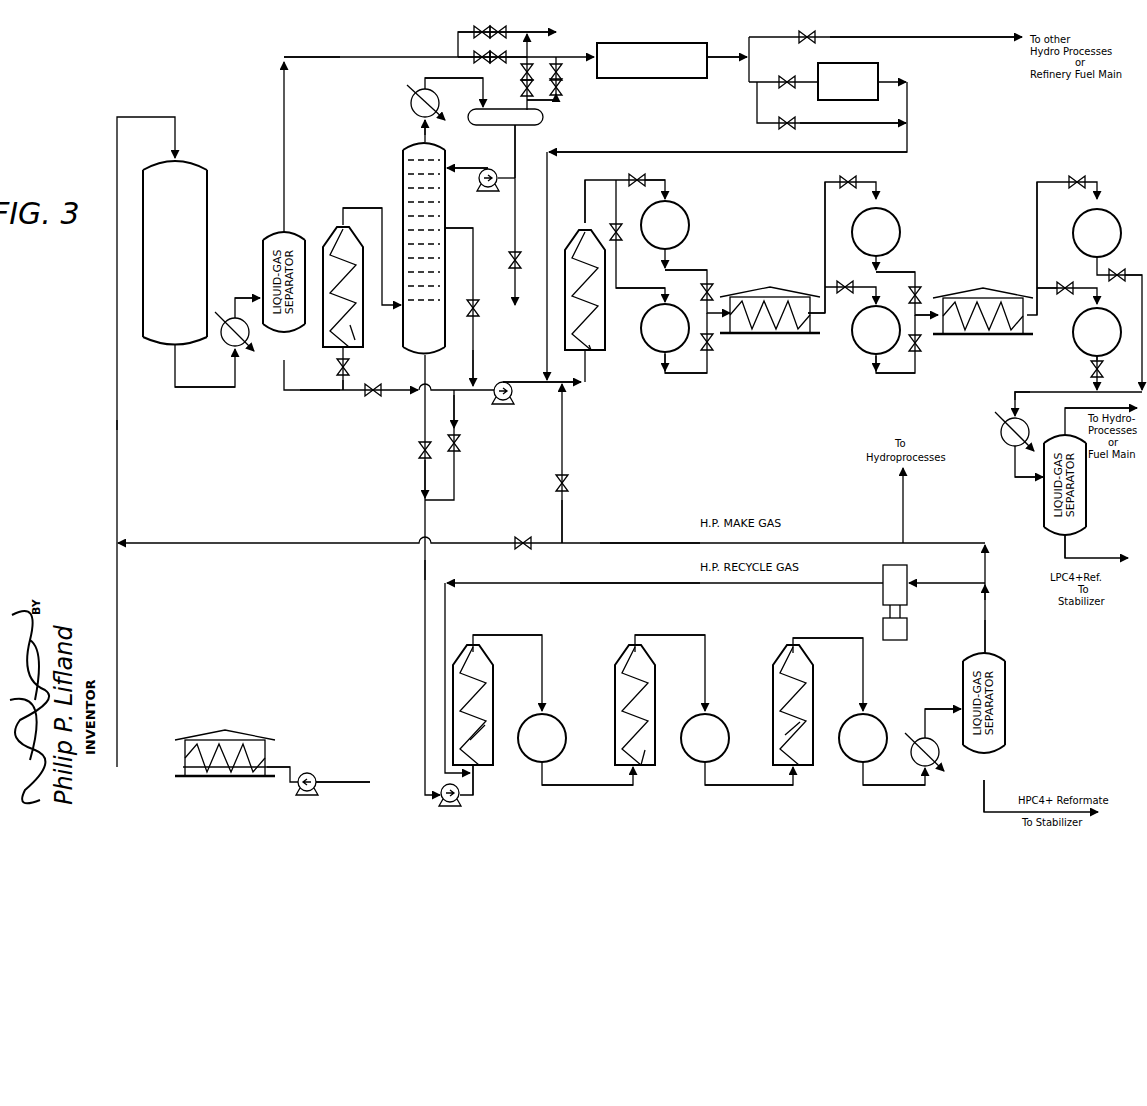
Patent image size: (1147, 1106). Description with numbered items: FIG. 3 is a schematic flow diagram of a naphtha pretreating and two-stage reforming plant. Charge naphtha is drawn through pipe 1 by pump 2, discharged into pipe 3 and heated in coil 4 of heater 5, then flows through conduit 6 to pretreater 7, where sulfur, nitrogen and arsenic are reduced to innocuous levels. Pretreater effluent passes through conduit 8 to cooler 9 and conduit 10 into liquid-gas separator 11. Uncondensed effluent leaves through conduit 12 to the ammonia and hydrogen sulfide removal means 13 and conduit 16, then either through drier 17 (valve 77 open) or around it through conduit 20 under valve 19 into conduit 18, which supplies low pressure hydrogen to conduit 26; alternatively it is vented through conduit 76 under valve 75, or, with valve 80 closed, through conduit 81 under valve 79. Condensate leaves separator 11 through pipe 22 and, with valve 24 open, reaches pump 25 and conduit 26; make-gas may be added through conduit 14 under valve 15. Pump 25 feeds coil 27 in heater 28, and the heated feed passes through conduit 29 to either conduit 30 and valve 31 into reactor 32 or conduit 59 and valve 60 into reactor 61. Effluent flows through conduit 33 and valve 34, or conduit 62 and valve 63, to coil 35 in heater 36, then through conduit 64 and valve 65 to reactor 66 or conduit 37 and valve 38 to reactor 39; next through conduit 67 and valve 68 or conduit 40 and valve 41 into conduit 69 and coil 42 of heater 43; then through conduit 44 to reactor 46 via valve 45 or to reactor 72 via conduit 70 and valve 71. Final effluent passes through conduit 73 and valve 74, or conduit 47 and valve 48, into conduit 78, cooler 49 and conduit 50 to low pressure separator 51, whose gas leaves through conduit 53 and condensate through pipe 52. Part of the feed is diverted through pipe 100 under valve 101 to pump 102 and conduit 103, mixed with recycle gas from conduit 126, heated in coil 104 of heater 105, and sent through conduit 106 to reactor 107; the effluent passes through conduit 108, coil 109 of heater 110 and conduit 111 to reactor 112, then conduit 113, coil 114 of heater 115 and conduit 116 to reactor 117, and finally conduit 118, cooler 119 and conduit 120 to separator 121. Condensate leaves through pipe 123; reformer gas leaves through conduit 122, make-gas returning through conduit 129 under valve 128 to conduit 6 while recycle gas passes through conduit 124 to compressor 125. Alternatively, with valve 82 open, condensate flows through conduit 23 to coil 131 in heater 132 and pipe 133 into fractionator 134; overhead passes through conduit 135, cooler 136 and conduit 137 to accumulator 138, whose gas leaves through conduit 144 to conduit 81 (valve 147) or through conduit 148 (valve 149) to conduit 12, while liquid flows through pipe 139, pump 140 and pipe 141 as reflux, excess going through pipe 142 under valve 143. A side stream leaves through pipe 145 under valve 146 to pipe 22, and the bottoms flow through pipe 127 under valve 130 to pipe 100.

The pipe 1 is at (352, 780).
The pump 2 is at (313, 772).
The pipe 3 is at (284, 766).
The coil 4 is at (200, 785).
The heater 5 is at (183, 752).
The conduit 6 is at (118, 419).
The pretreater 7 is at (208, 249).
The conduit 8 is at (210, 389).
The cooler 9 is at (225, 348).
The conduit 10 is at (246, 297).
The liquid-gas separator 11 is at (262, 258).
The conduit 12 is at (360, 58).
The means for removing ammonia and hydrogen sulfide 13 is at (665, 79).
The conduit 14 is at (564, 518).
The valve 15 is at (569, 485).
The conduit 16 is at (739, 59).
The drier 17 is at (848, 81).
The conduit 18 is at (750, 153).
The valve 19 is at (786, 125).
The conduit 20 is at (847, 125).
The pipe 22 is at (342, 392).
The conduit 23 is at (322, 391).
The valve 24 is at (375, 397).
The pump 25 is at (496, 402).
The conduit 26 is at (537, 384).
The coil 27 is at (592, 351).
The heater 28 is at (605, 336).
The conduit 29 is at (584, 182).
The conduit 30 is at (668, 190).
The valve 31 is at (640, 177).
The reactor 32 is at (690, 226).
The conduit 33 is at (687, 271).
The valve 34 is at (712, 291).
The coil 35 is at (768, 334).
The heater 36 is at (801, 334).
The conduit 37 is at (824, 242).
The valve 38 is at (847, 189).
The reactor 39 is at (892, 221).
The conduit 40 is at (896, 272).
The valve 41 is at (921, 290).
The coil 42 is at (980, 336).
The heater 43 is at (1011, 336).
The conduit 44 is at (1036, 243).
The valve 45 is at (1079, 177).
The reactor 46 is at (1073, 232).
The conduit 47 is at (1102, 266).
The valve 48 is at (1123, 280).
The cooler 49 is at (1000, 432).
The conduit 50 is at (1014, 472).
The low pressure liquid-gas separator 51 is at (1045, 506).
The pipe 52 is at (1064, 556).
The conduit 53 is at (1068, 409).
The conduit 59 is at (636, 288).
The valve 60 is at (617, 240).
The low pressure reformer 61 is at (652, 350).
The conduit 62 is at (680, 374).
The valve 63 is at (708, 351).
The conduit 64 is at (825, 318).
The valve 65 is at (842, 292).
The reactor 66 is at (858, 349).
The conduit 67 is at (902, 374).
The valve 68 is at (919, 350).
The conduit 69 is at (928, 314).
The conduit 70 is at (1046, 290).
The valve 71 is at (1064, 282).
The reactor 72 is at (1073, 337).
The conduit 73 is at (1086, 359).
The valve 74 is at (1086, 372).
The valve 75 is at (798, 40).
The conduit 76 is at (954, 38).
The valve 77 is at (786, 84).
The conduit 78 is at (1024, 392).
The valve 79 is at (501, 51).
The valve 80 is at (458, 57).
The conduit 81 is at (458, 35).
The valve 82 is at (335, 368).
The pipe 100 is at (424, 573).
The valve 101 is at (462, 448).
The pump 102 is at (466, 807).
The conduit 103 is at (478, 775).
The coil 104 is at (486, 708).
The heater 105 is at (490, 670).
The conduit 106 is at (512, 635).
The reactor 107 is at (566, 727).
The conduit 108 is at (568, 790).
The coil 109 is at (641, 766).
The heater 110 is at (655, 672).
The conduit 111 is at (705, 645).
The reactor 112 is at (724, 723).
The conduit 113 is at (728, 791).
The coil 114 is at (786, 740).
The heater 115 is at (778, 677).
The conduit 116 is at (822, 637).
The reactor 117 is at (880, 718).
The conduit 118 is at (893, 791).
The cooler 119 is at (928, 768).
The conduit 120 is at (936, 705).
The liquid-gas separator 121 is at (1006, 718).
The conduit 122 is at (986, 639).
The pipe 123 is at (993, 812).
The conduit 124 is at (940, 586).
The compressor 125 is at (908, 633).
The conduit 126 is at (612, 583).
The pipe 127 is at (423, 478).
The valve 128 is at (526, 549).
The conduit 129 is at (638, 542).
The valve 130 is at (417, 450).
The coil 131 is at (352, 326).
The heater 132 is at (331, 240).
The pipe 133 is at (352, 207).
The fractionator 134 is at (404, 151).
The conduit 135 is at (424, 124).
The cooler 136 is at (411, 103).
The conduit 137 is at (455, 79).
The accumulator 138 is at (544, 118).
The pipe 139 is at (515, 138).
The pump 140 is at (486, 188).
The pipe 141 is at (473, 168).
The pipe 142 is at (472, 229).
The valve 143 is at (508, 260).
The conduit 144 is at (526, 92).
The pipe 145 is at (474, 360).
The valve 146 is at (480, 314).
The valve 147 is at (558, 65).
The conduit 148 is at (557, 100).
The valve 149 is at (560, 83).